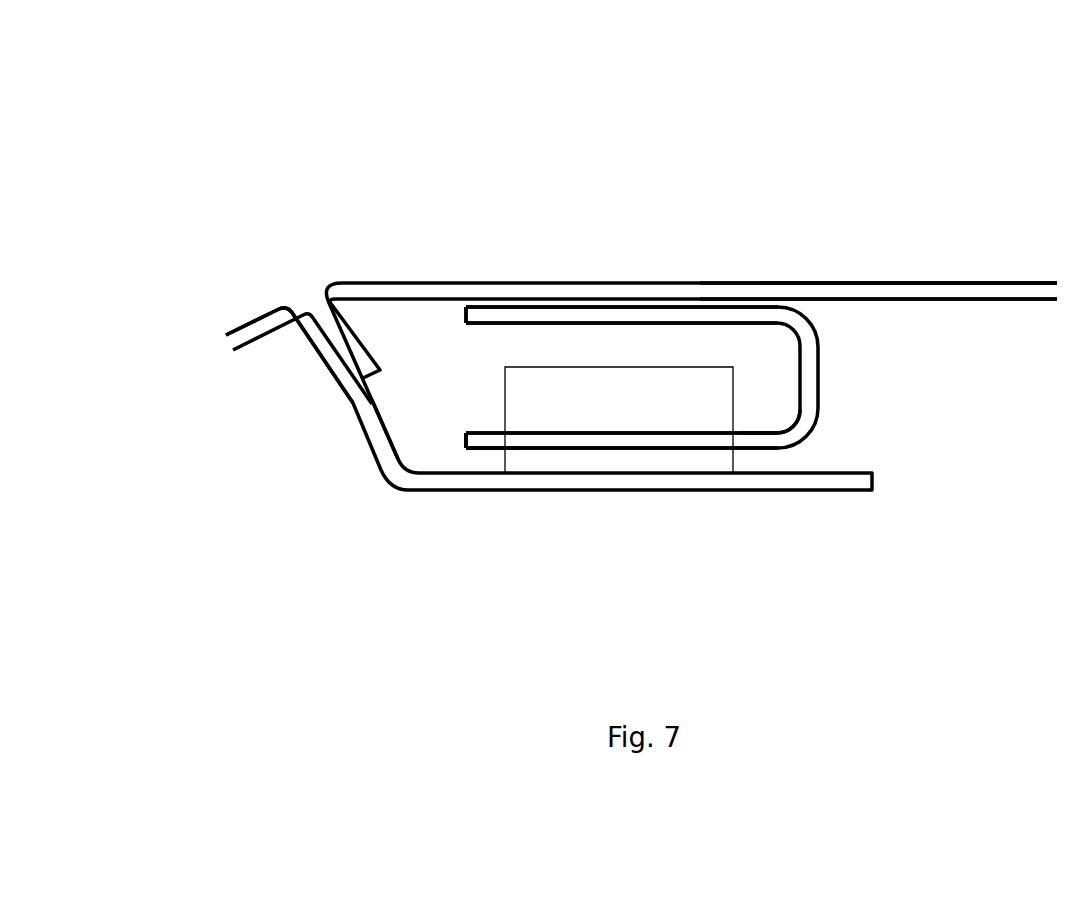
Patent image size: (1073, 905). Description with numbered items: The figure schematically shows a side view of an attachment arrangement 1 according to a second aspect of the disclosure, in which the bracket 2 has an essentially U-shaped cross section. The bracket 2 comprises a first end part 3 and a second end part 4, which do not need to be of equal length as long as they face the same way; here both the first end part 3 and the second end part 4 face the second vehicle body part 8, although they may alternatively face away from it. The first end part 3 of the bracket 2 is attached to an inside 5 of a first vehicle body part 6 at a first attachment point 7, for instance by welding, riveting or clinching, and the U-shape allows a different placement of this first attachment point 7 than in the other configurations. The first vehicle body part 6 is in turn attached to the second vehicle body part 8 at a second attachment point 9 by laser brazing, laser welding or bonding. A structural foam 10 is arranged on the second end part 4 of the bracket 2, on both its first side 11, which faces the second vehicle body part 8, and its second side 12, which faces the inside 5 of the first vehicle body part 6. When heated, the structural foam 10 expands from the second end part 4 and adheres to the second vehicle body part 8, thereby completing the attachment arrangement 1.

The attachment arrangement 1 is at (308, 158).
The bracket 2 is at (821, 386).
The first end part 3 is at (513, 298).
The second end part 4 is at (482, 427).
The inside 5 is at (965, 301).
The first vehicle body part 6 is at (803, 281).
The first attachment point 7 is at (557, 298).
The second vehicle body part 8 is at (368, 447).
The second attachment point 9 is at (327, 342).
The structural foam 10 is at (612, 461).
The first side 11 is at (483, 452).
The second side 12 is at (750, 428).